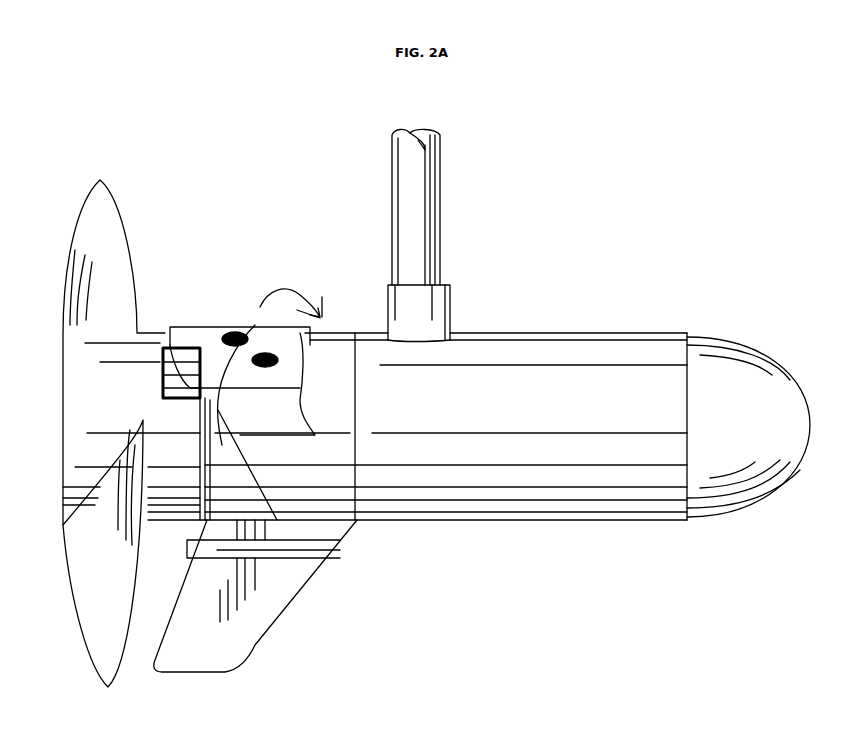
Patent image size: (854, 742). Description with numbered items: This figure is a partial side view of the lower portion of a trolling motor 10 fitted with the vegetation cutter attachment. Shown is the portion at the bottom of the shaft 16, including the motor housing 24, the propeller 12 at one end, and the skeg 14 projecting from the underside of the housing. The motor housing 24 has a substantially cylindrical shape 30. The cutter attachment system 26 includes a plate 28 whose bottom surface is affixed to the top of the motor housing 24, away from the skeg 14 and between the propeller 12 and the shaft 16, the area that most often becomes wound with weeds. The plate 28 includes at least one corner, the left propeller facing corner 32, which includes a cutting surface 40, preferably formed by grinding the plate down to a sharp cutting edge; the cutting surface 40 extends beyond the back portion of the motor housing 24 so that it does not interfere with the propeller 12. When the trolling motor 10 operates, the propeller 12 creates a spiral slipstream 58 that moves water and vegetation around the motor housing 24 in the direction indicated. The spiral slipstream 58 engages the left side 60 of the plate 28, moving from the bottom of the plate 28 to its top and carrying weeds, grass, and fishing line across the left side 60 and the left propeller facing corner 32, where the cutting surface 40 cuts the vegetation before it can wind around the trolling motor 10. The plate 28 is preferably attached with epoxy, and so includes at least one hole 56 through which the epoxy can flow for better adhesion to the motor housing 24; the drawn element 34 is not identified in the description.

The trolling motor 10 is at (620, 252).
The propeller 12 is at (70, 235).
The skeg 14 is at (265, 612).
The shaft 16 is at (410, 167).
The motor housing 24 is at (722, 395).
The cutter attachment system 26 is at (298, 252).
The plate 28 is at (315, 333).
The substantially cylindrical shape 30 is at (512, 400).
The left propeller facing corner 32 is at (168, 401).
The mounting plate 34 is at (263, 499).
The cutting surface 40 is at (163, 384).
The hole 56 is at (270, 365).
The spiral slipstream 58 is at (250, 320).
The left side 60 is at (247, 393).